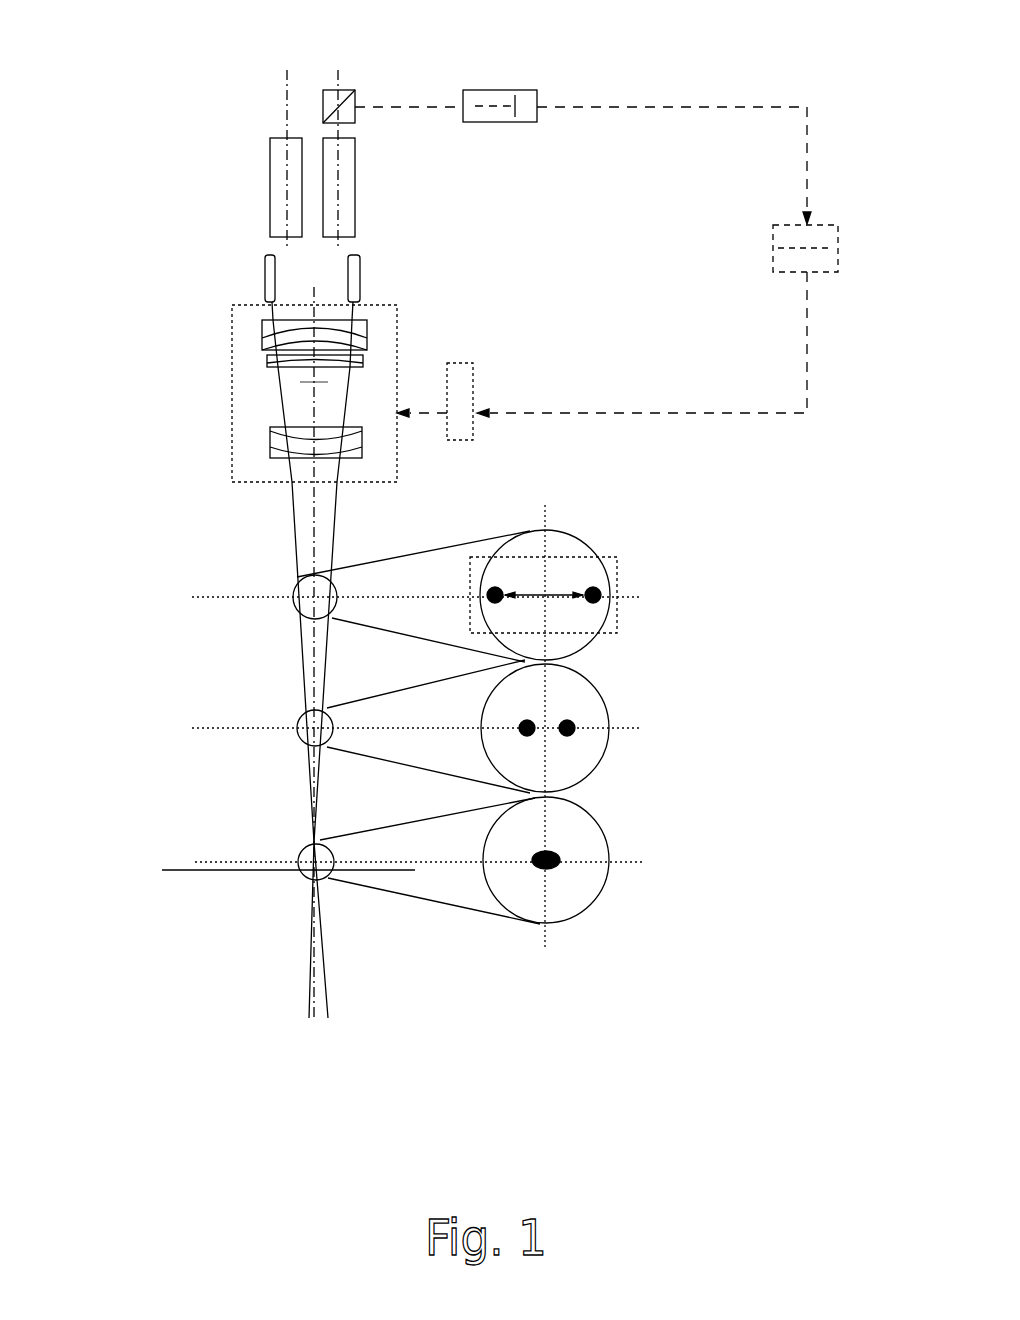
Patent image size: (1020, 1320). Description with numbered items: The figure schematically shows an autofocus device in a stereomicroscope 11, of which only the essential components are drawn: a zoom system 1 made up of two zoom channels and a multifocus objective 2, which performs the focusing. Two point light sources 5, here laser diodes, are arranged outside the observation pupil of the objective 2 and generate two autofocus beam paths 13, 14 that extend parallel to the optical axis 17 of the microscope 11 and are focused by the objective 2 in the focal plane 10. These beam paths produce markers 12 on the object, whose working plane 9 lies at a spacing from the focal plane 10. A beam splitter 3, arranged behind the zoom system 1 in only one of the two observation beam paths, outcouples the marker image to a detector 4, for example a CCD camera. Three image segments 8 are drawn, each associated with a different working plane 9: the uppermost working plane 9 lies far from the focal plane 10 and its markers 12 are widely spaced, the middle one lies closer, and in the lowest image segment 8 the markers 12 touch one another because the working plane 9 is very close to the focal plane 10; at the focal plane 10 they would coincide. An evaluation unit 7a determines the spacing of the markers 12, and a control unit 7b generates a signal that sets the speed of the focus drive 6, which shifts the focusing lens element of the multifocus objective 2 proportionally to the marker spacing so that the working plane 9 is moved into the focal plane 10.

The zoom system 1 is at (258, 198).
The multifocus objective 2 is at (220, 366).
The beam splitter 3 is at (354, 84).
The detector 4 is at (499, 134).
The point light source 5 is at (294, 255).
The focus drive 6 is at (488, 385).
The evaluation unit 7a is at (840, 214).
The control unit 7b is at (840, 285).
The image segment 8 is at (586, 548).
The working plane 9 is at (221, 609).
The focal plane 10 is at (193, 884).
The microscope 11 is at (131, 505).
The markers 12 is at (492, 588).
The autofocus beam path 13 is at (292, 530).
The autofocus beam path 14 is at (337, 530).
The optical axis 17 is at (313, 384).